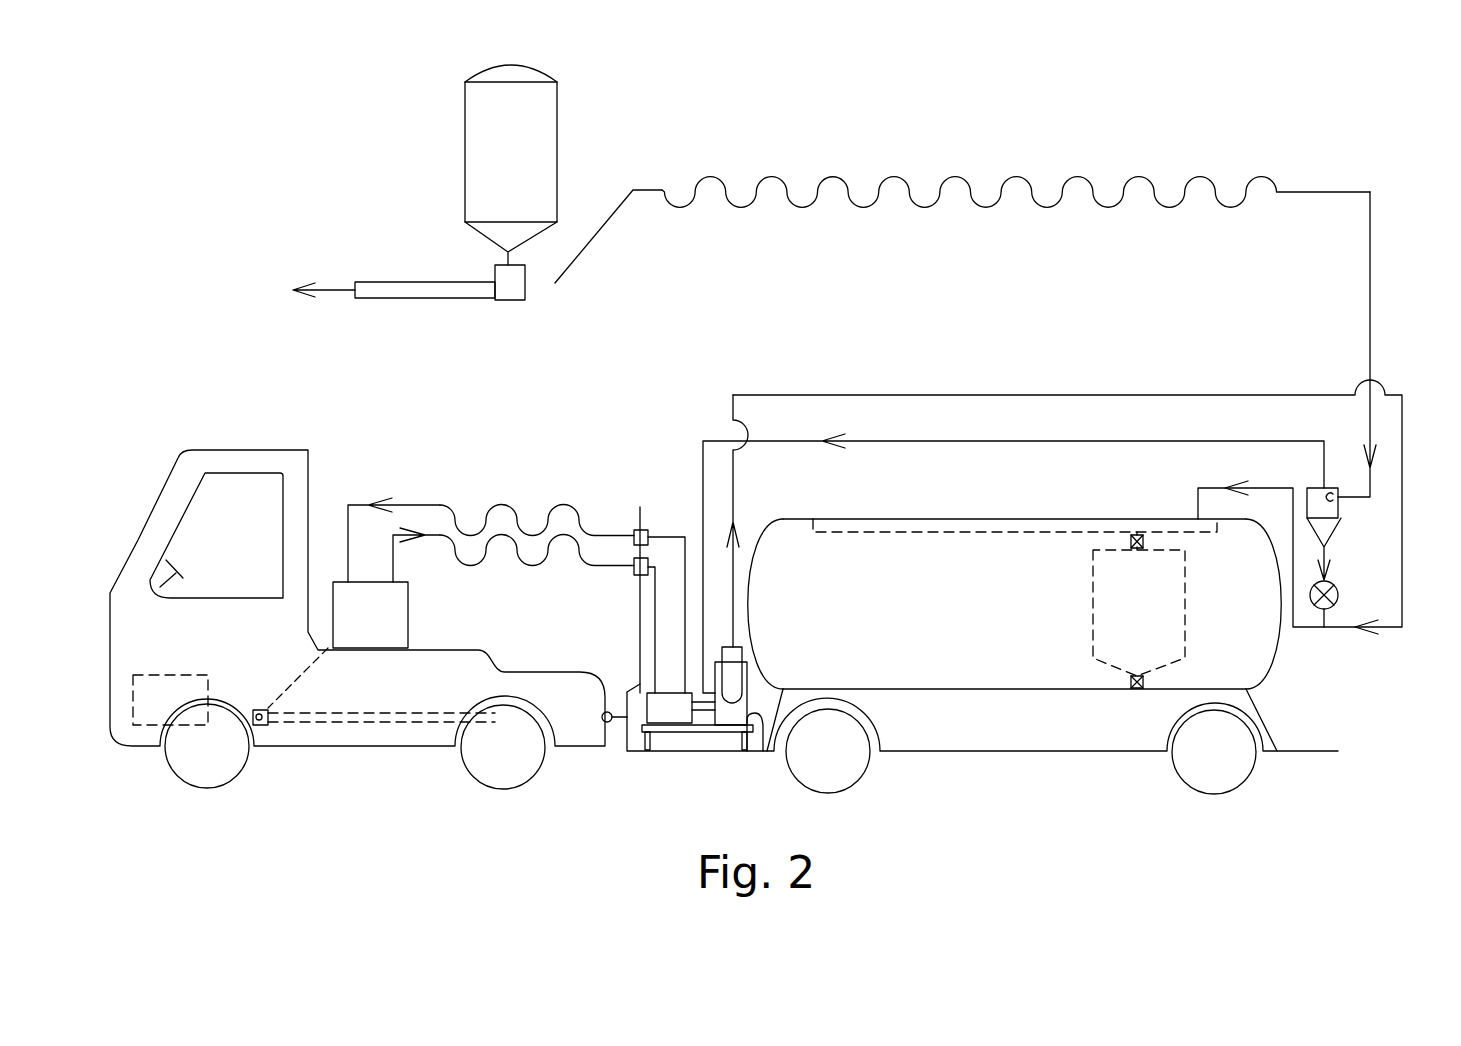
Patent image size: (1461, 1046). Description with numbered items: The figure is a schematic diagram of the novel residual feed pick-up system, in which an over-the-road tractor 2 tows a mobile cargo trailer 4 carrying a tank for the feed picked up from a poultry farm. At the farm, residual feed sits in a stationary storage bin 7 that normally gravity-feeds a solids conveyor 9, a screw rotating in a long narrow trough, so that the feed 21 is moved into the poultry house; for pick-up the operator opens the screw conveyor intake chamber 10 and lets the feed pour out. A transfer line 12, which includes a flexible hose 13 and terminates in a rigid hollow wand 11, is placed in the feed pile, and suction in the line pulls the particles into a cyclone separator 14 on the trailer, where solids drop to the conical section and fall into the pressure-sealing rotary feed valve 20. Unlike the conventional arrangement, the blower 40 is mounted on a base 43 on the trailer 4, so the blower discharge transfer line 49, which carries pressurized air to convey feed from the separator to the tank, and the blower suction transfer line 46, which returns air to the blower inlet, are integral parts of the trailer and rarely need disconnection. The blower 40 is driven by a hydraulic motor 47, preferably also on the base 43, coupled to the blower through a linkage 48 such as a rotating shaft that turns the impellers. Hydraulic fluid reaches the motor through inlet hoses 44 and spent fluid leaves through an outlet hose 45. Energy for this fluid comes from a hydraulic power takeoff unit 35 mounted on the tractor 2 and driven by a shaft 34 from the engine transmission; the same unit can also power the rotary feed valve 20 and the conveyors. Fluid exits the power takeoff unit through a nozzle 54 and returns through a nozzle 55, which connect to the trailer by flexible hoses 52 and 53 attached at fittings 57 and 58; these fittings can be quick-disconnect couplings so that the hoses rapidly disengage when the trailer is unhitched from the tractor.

The tractor 2 is at (240, 450).
The mobile cargo trailer 4 is at (640, 528).
The storage bin 7 is at (465, 166).
The solids conveyor 9 is at (440, 298).
The screw conveyor intake chamber 10 is at (495, 270).
The rigid hollow wand 11 is at (628, 205).
The transfer line 12 is at (1370, 293).
The flexible hose 13 is at (773, 176).
The cyclone separator 14 is at (1332, 538).
The rotary feed valve 20 is at (1338, 604).
The feed 21 is at (337, 288).
The shaft 34 is at (275, 708).
The hydraulic power takeoff unit 35 is at (408, 632).
The blower 40 is at (754, 751).
The base 43 is at (648, 740).
The inlet hoses 44 is at (647, 613).
The outlet hose 45 is at (678, 538).
The blower suction transfer line 46 is at (1005, 441).
The hydraulic motor 47 is at (676, 715).
The linkage 48 is at (710, 735).
The blower discharge transfer line 49 is at (990, 395).
The flexible hose 52 is at (533, 562).
The flexible hose 53 is at (532, 506).
The nozzle 54 is at (394, 582).
The nozzle 55 is at (348, 515).
The fitting 57 is at (634, 530).
The fitting 58 is at (634, 577).